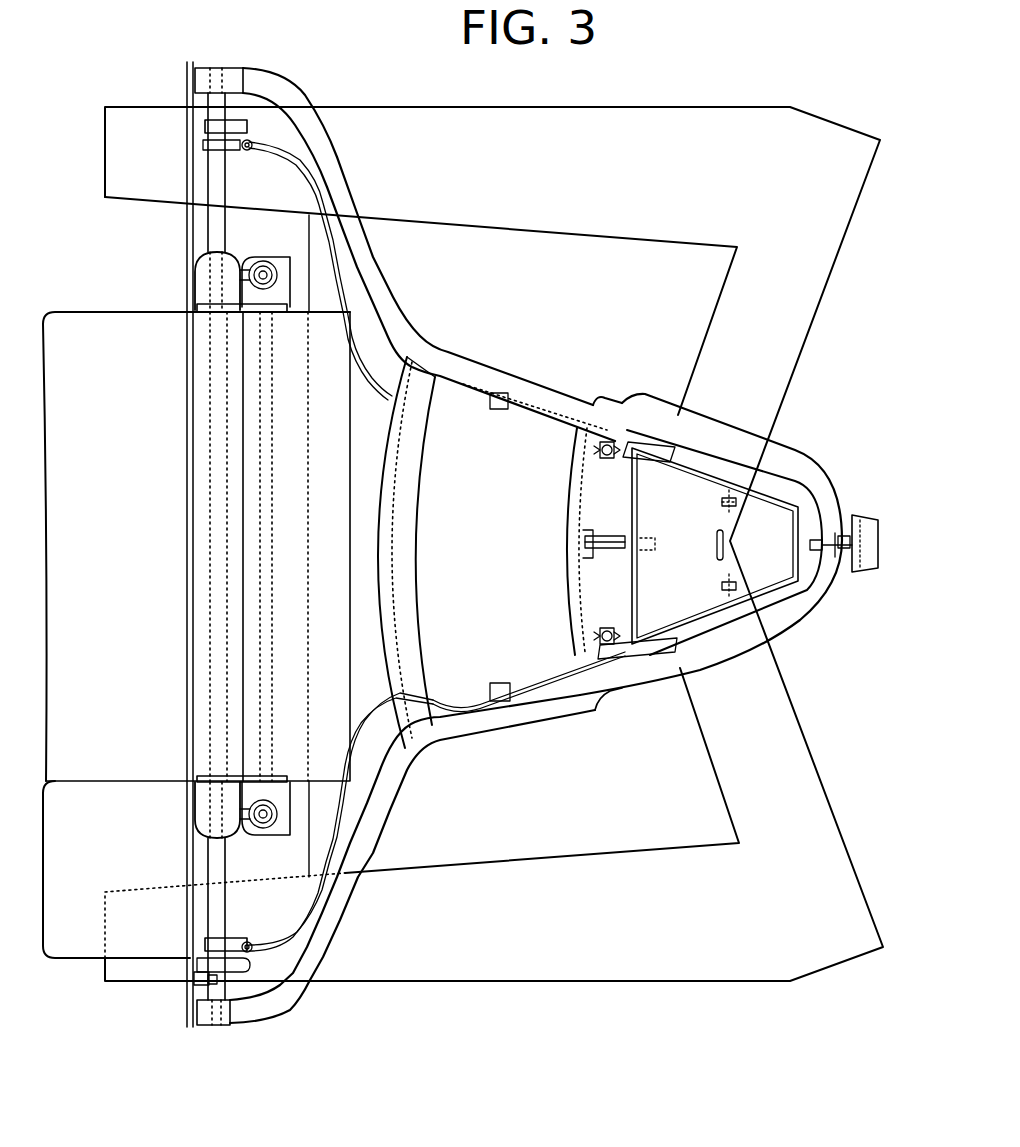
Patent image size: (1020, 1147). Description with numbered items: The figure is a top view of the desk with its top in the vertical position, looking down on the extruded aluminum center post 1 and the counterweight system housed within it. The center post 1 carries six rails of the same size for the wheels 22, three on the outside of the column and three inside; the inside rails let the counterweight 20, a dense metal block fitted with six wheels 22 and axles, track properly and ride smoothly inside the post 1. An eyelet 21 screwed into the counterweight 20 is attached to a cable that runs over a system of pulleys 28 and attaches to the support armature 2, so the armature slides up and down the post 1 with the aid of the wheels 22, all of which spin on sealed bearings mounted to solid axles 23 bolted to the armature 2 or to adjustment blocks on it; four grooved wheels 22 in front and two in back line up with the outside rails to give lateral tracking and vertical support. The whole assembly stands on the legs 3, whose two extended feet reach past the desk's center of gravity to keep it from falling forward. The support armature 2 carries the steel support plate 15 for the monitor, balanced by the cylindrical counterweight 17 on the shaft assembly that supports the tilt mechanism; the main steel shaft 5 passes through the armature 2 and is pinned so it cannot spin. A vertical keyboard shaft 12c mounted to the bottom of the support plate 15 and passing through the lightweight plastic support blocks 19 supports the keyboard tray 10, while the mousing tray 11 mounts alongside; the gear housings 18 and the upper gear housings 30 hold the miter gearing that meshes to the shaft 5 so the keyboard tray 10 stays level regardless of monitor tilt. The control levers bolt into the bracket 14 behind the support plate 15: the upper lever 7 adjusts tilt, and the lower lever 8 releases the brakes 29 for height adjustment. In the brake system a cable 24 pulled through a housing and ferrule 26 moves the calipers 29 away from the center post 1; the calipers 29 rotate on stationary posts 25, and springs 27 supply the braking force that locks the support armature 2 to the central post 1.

The central post 1 is at (800, 503).
The support arm 2 is at (797, 625).
The legs 3 is at (630, 962).
The steel shaft 5 is at (217, 868).
The upper lever 7 is at (205, 968).
The lower lever 8 is at (208, 982).
The keyboard tray 10 is at (67, 330).
The mousing tray 11 is at (72, 952).
The vertical keyboard shaft 12c is at (422, 545).
The bracket 14 is at (205, 130).
The support plate 15 is at (190, 244).
The cylindrical counterweight 17 is at (318, 582).
The gear housings 18 is at (283, 820).
The lightweight plastic support blocks 19 is at (262, 820).
The counterweight 20 is at (757, 517).
The eyelet 21 is at (728, 545).
The wheels 22 is at (852, 520).
The solid axles 23 is at (834, 560).
The cable 24 is at (300, 932).
The stationary posts 25 is at (608, 645).
The ferrule 26 is at (503, 702).
The springs 27 is at (606, 405).
The pulleys 28 is at (590, 556).
The brakes 29 is at (652, 645).
The upper gear housings 30 is at (206, 810).